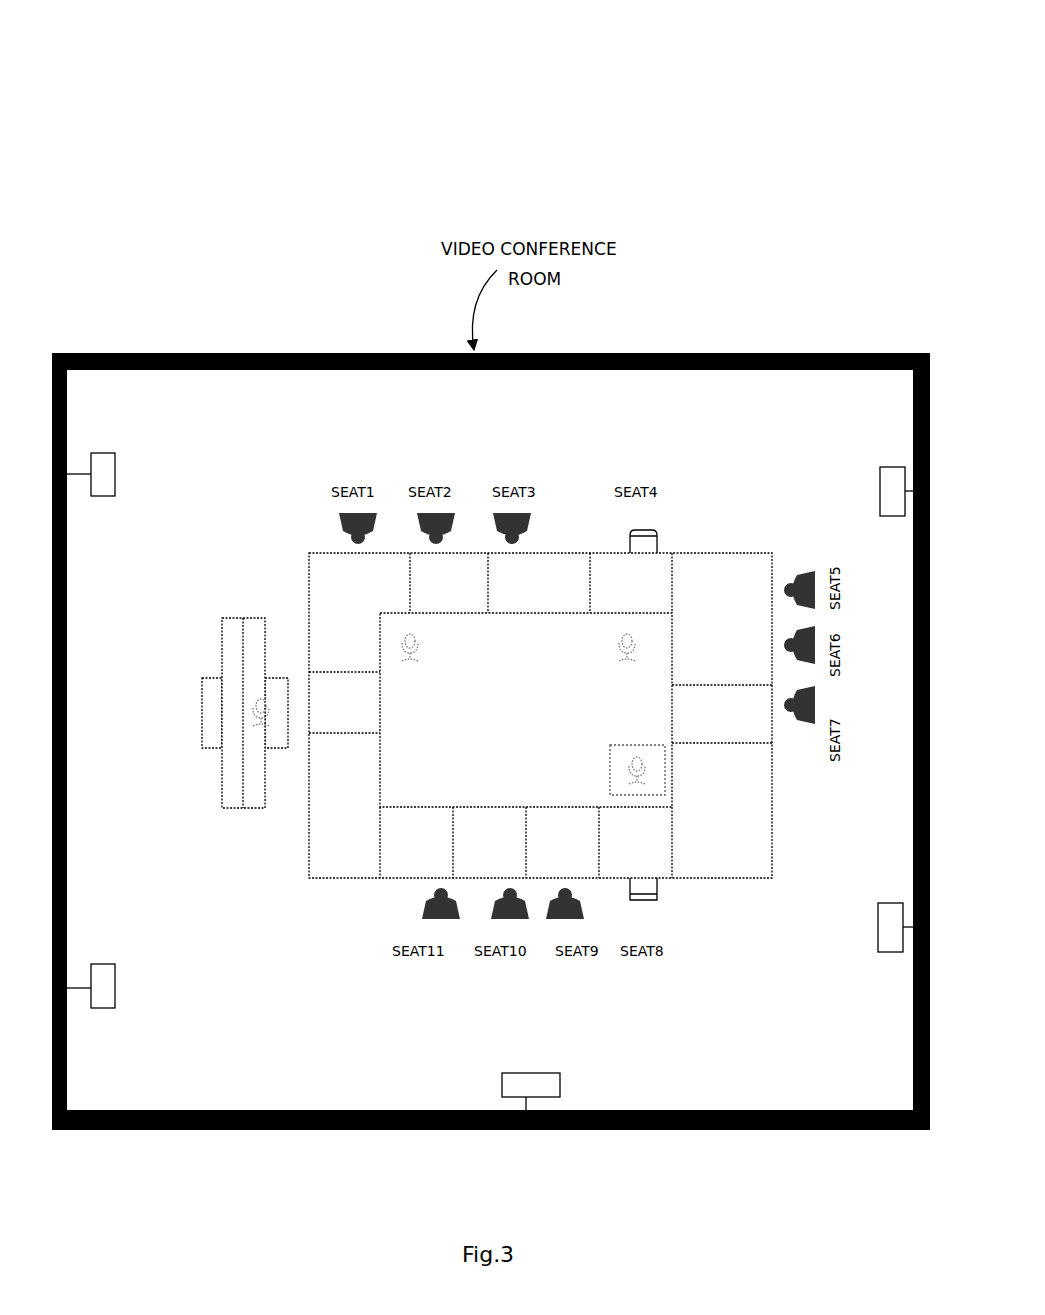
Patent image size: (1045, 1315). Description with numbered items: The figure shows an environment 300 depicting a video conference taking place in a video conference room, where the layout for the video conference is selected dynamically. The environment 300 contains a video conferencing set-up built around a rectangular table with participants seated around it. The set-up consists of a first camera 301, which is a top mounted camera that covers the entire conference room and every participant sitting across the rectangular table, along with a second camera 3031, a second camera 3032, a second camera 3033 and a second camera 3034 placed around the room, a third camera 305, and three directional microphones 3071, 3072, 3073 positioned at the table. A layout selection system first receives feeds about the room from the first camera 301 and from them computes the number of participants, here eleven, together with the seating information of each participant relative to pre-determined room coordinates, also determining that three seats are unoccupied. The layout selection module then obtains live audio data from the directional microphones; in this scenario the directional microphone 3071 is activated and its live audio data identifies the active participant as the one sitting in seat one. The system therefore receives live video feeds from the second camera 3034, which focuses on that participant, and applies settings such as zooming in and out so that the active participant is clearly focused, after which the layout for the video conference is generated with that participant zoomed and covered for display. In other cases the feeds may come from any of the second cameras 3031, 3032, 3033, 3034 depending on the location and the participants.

The environment 300 is at (601, 76).
The first camera 301 is at (270, 703).
The second camera 3031 is at (113, 451).
The second camera 3032 is at (879, 465).
The second camera 3033 is at (877, 902).
The second camera 3034 is at (519, 1071).
The third camera 305 is at (95, 962).
The directional microphone 3071 is at (411, 662).
The directional microphone 3072 is at (609, 645).
The directional microphone 3073 is at (624, 765).